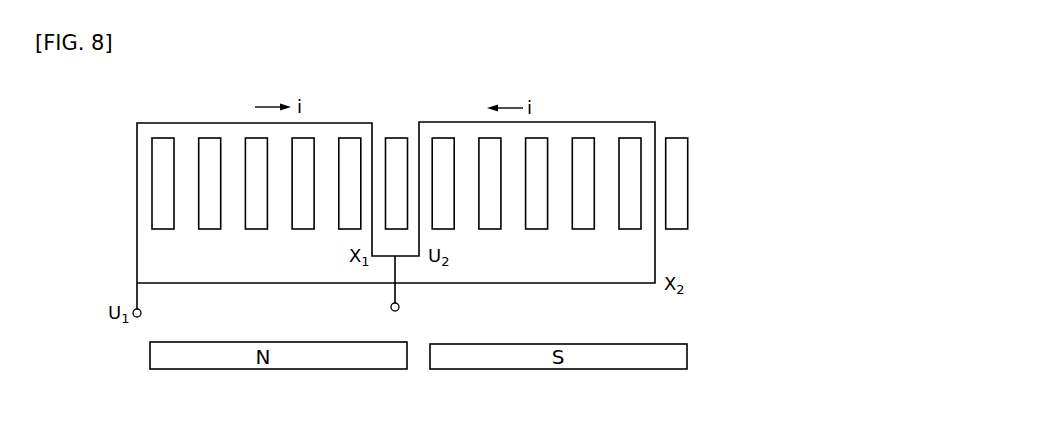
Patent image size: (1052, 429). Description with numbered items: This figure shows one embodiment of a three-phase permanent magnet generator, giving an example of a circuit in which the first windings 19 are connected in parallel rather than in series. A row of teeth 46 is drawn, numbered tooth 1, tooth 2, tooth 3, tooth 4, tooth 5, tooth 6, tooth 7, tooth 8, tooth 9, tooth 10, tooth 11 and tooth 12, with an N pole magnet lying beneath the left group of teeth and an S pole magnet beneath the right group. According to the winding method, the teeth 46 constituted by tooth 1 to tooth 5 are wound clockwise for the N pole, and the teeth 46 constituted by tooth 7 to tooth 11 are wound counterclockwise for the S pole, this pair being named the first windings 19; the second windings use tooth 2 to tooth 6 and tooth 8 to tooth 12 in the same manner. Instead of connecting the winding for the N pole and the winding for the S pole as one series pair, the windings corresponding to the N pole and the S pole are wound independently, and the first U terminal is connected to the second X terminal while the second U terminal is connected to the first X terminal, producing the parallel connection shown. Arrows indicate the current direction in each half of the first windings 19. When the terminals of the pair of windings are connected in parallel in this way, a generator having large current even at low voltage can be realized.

The first windings 19 is at (137, 225).
The teeth 46 is at (681, 159).
The tooth 1 is at (163, 183).
The tooth 2 is at (210, 183).
The tooth 3 is at (256, 183).
The tooth 4 is at (303, 183).
The tooth 5 is at (350, 183).
The tooth 6 is at (397, 183).
The tooth 7 is at (443, 183).
The tooth 8 is at (490, 183).
The tooth 9 is at (537, 183).
The tooth 10 is at (583, 183).
The tooth 11 is at (630, 183).
The tooth 12 is at (677, 183).